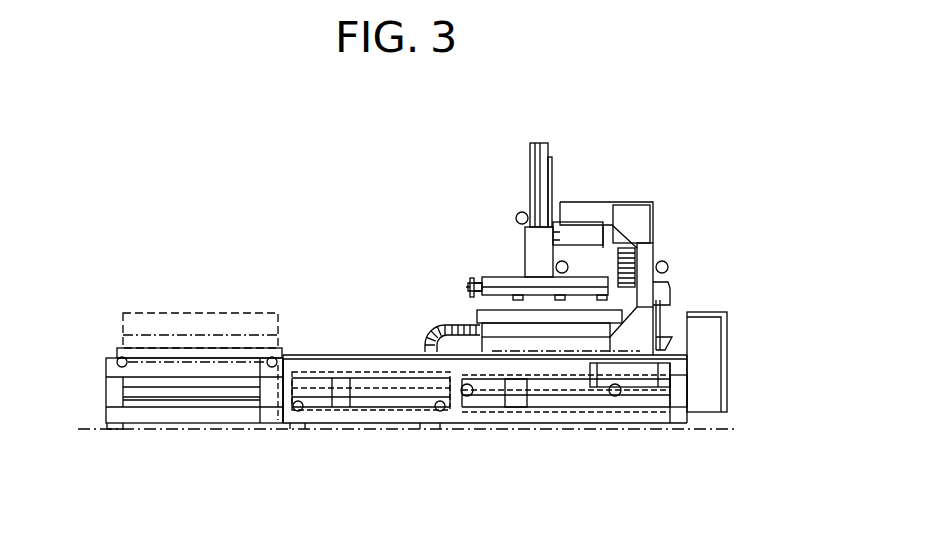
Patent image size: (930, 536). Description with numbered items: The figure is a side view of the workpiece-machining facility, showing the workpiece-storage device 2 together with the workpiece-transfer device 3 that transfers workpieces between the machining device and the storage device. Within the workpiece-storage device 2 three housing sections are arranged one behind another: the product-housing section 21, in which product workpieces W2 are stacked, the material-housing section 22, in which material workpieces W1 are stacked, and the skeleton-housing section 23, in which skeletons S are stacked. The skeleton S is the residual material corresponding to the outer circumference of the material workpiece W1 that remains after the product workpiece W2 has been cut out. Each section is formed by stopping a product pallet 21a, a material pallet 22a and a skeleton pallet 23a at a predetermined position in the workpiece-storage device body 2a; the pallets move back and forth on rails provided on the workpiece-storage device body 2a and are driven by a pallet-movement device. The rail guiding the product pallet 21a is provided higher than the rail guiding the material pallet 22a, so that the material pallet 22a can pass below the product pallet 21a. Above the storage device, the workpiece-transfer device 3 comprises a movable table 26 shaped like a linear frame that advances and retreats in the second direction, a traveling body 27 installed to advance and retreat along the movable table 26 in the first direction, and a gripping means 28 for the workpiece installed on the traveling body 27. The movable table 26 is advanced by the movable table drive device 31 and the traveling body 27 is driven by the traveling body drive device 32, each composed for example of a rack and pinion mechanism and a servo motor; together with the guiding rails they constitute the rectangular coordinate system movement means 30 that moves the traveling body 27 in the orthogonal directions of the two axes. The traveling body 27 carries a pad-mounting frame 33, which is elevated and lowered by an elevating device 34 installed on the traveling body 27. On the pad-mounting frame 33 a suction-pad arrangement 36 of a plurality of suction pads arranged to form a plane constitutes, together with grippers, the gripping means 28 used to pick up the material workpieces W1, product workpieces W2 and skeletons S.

The workpiece-storage device 2 is at (95, 366).
The workpiece-storage device body 2a is at (272, 415).
The workpiece-transfer device 3 is at (626, 183).
The product-housing section 21 is at (190, 480).
The product pallet 21a is at (152, 352).
The material-housing section 22 is at (424, 480).
The material pallet 22a is at (316, 405).
The skeleton-housing section 23 is at (619, 480).
The skeleton pallet 23a is at (473, 398).
The movable table 26 is at (641, 228).
The traveling body 27 is at (524, 245).
The gripping means 28 is at (456, 276).
The rectangular coordinate system movement means 30 is at (682, 242).
The movable table drive device 31 is at (670, 267).
The traveling body drive device 32 is at (566, 260).
The pad-mounting frame 33 is at (512, 278).
The elevating device 34 is at (516, 214).
The suction-pad arrangement 36 is at (466, 297).
The skeleton S is at (470, 355).
The material workpiece W1 is at (320, 372).
The product workpiece W2 is at (207, 328).